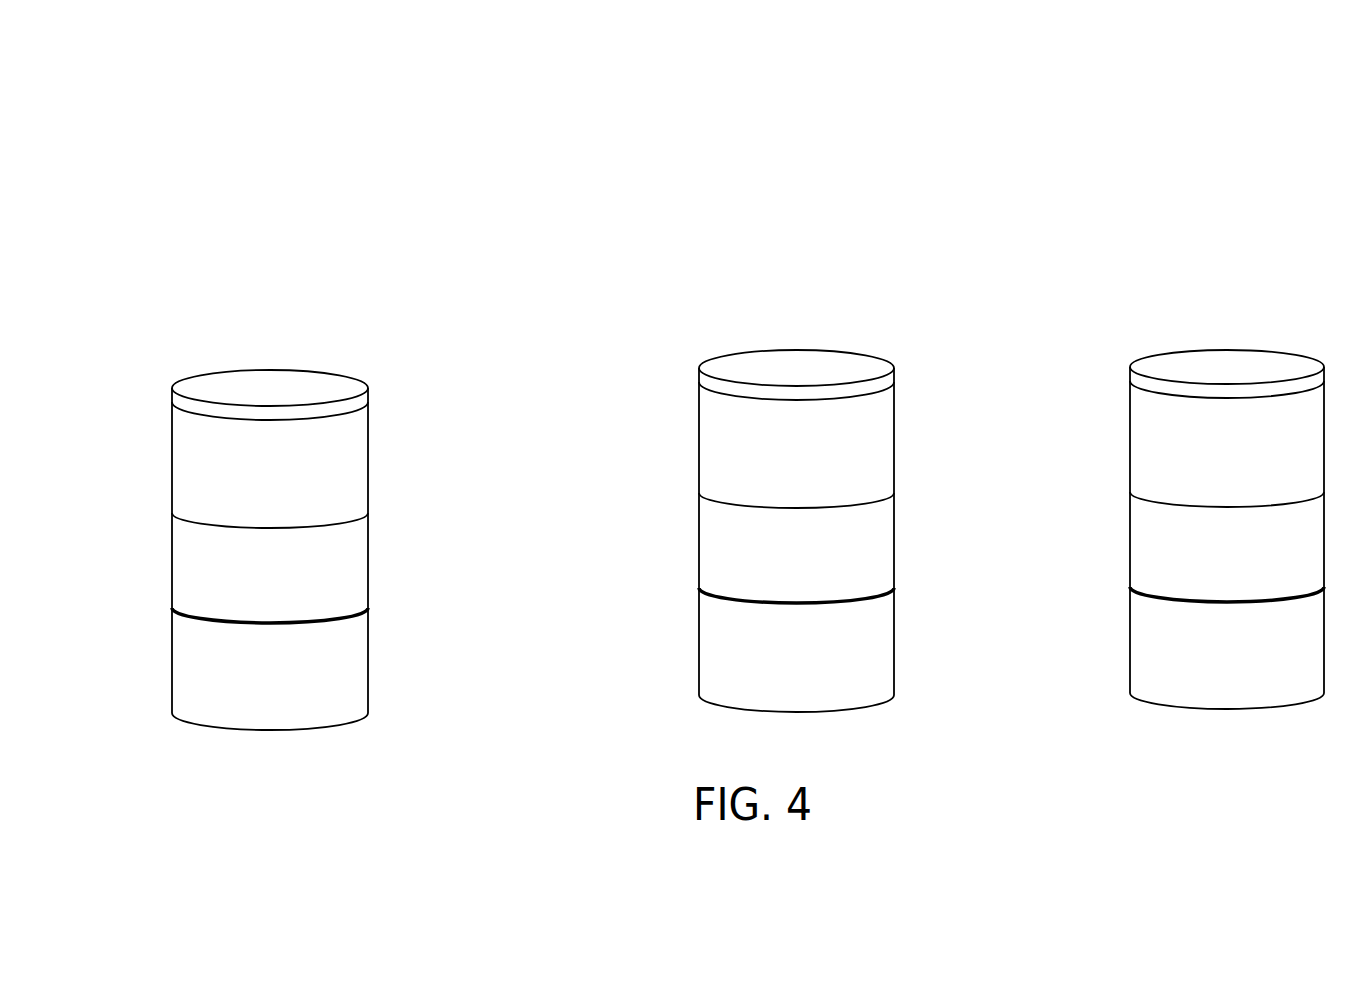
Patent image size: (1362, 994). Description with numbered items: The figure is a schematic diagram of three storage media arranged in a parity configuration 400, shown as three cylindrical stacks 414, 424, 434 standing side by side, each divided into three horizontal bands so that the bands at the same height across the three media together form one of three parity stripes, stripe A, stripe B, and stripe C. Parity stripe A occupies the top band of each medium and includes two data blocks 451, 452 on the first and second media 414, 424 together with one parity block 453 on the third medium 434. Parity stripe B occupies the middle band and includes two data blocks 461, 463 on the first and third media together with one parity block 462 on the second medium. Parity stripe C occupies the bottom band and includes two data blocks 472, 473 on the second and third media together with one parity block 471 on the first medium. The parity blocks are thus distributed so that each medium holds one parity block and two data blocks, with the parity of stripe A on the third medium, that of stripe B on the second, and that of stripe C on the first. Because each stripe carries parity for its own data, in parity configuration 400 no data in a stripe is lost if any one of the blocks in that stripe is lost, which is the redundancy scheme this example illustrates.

The parity configuration 400 is at (1242, 142).
The first chip stack 414 is at (270, 370).
The second chip stack 424 is at (797, 350).
The third chip stack 434 is at (1227, 350).
The data block 451 is at (170, 445).
The data block 452 is at (698, 430).
The parity block 453 is at (1128, 427).
The data block 461 is at (173, 577).
The parity block 462 is at (698, 557).
The data block 463 is at (1128, 555).
The parity block 471 is at (173, 652).
The data block 472 is at (698, 633).
The data block 473 is at (1128, 632).